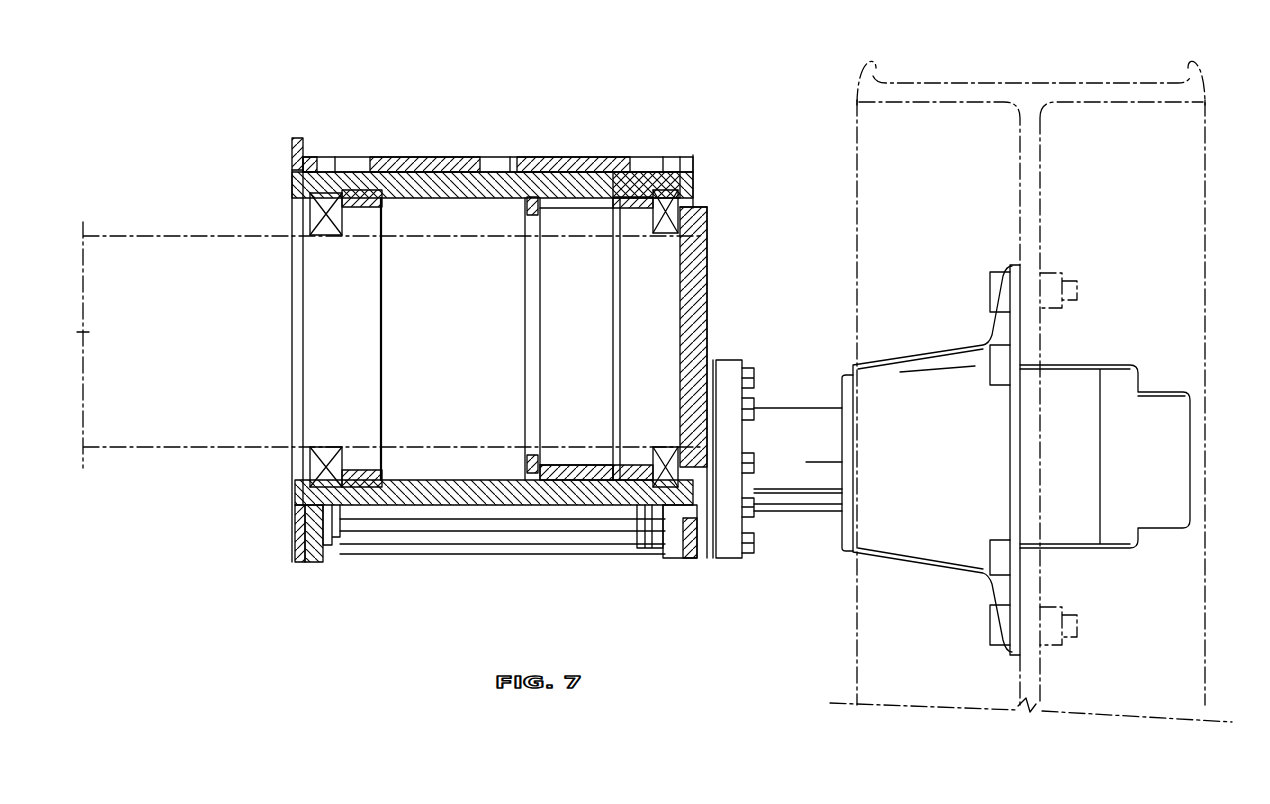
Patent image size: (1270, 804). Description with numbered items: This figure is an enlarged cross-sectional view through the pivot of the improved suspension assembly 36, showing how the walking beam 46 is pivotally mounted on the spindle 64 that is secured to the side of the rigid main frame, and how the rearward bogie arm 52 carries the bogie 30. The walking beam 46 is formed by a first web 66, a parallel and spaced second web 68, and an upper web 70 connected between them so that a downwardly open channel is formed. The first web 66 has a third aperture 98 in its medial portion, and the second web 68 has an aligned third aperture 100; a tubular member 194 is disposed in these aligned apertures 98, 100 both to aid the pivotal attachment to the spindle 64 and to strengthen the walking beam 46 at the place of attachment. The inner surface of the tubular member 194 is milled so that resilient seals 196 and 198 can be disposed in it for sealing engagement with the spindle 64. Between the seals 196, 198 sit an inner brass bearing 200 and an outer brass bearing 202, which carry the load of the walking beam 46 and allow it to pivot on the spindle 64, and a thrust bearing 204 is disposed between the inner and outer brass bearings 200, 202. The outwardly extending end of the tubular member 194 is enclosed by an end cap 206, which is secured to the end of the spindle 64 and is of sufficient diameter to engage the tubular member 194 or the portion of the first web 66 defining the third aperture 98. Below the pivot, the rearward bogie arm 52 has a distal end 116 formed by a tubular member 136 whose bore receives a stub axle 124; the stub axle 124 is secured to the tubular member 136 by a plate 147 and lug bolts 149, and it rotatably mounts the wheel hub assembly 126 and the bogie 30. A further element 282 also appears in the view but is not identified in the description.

The bogie 30 is at (1150, 246).
The suspension assembly 36 is at (670, 134).
The walking beam 46 is at (442, 156).
The rearward bogie arm 52 is at (570, 562).
The spindle 64 is at (200, 402).
The first web 66 is at (700, 185).
The second web 68 is at (292, 294).
The upper web 70 is at (380, 170).
The third aperture 98 is at (706, 207).
The third aperture 100 is at (291, 192).
The distal end 116 is at (496, 560).
The stub axle 124 is at (770, 512).
The wheel hub assembly 126 is at (1092, 565).
The tubular member 136 is at (362, 548).
The plate 147 is at (727, 548).
The lug bolts 149 is at (753, 548).
The tubular member 194 is at (572, 170).
The resilient seal 196 is at (693, 167).
The resilient seal 198 is at (320, 215).
The inner brass bearing 200 is at (380, 192).
The outer brass bearing 202 is at (617, 200).
The thrust bearing 204 is at (528, 205).
The end cap 206 is at (708, 280).
The seal 282 is at (650, 476).